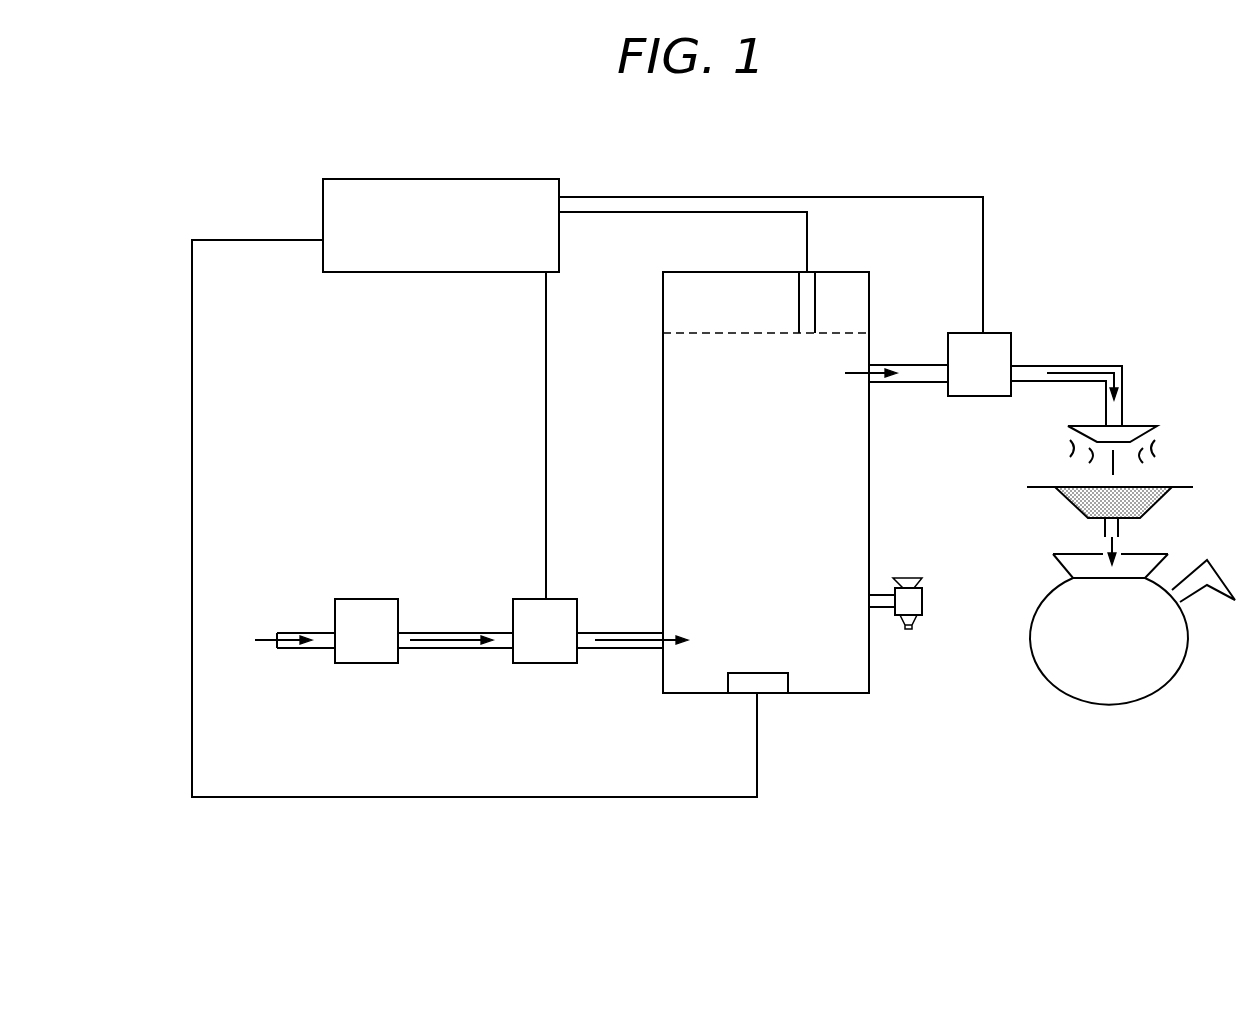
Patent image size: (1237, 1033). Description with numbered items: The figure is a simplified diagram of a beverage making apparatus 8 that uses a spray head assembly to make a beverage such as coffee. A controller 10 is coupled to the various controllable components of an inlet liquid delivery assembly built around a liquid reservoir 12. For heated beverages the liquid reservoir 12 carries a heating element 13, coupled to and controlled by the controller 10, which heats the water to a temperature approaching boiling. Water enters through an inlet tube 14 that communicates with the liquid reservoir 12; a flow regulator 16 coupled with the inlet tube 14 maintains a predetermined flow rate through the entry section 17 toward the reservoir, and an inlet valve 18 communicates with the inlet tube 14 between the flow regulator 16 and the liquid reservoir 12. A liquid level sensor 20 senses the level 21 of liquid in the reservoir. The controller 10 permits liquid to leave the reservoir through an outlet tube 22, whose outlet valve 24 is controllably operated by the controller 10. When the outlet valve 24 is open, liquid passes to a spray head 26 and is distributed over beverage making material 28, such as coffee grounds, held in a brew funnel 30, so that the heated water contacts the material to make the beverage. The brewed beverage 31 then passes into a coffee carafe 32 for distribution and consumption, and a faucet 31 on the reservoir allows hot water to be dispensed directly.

The beverage making apparatus 8 is at (985, 764).
The controller 10 is at (426, 273).
The liquid reservoir 12 is at (688, 695).
The heating element 13 is at (770, 685).
The inlet tube 14 is at (297, 668).
The flow regulator 16 is at (378, 665).
The entry section 17 is at (465, 650).
The inlet valve 18 is at (558, 665).
The liquid level sensor 20 is at (813, 302).
The level 21 is at (886, 333).
The outlet tube 22 is at (900, 402).
The outlet valve 24 is at (985, 398).
The spray head 26 is at (1152, 416).
The beverage making material 28 is at (1152, 515).
The brew funnel 30 is at (1043, 488).
The brewed beverage 31 is at (924, 600).
The coffee carafe 32 is at (1150, 693).